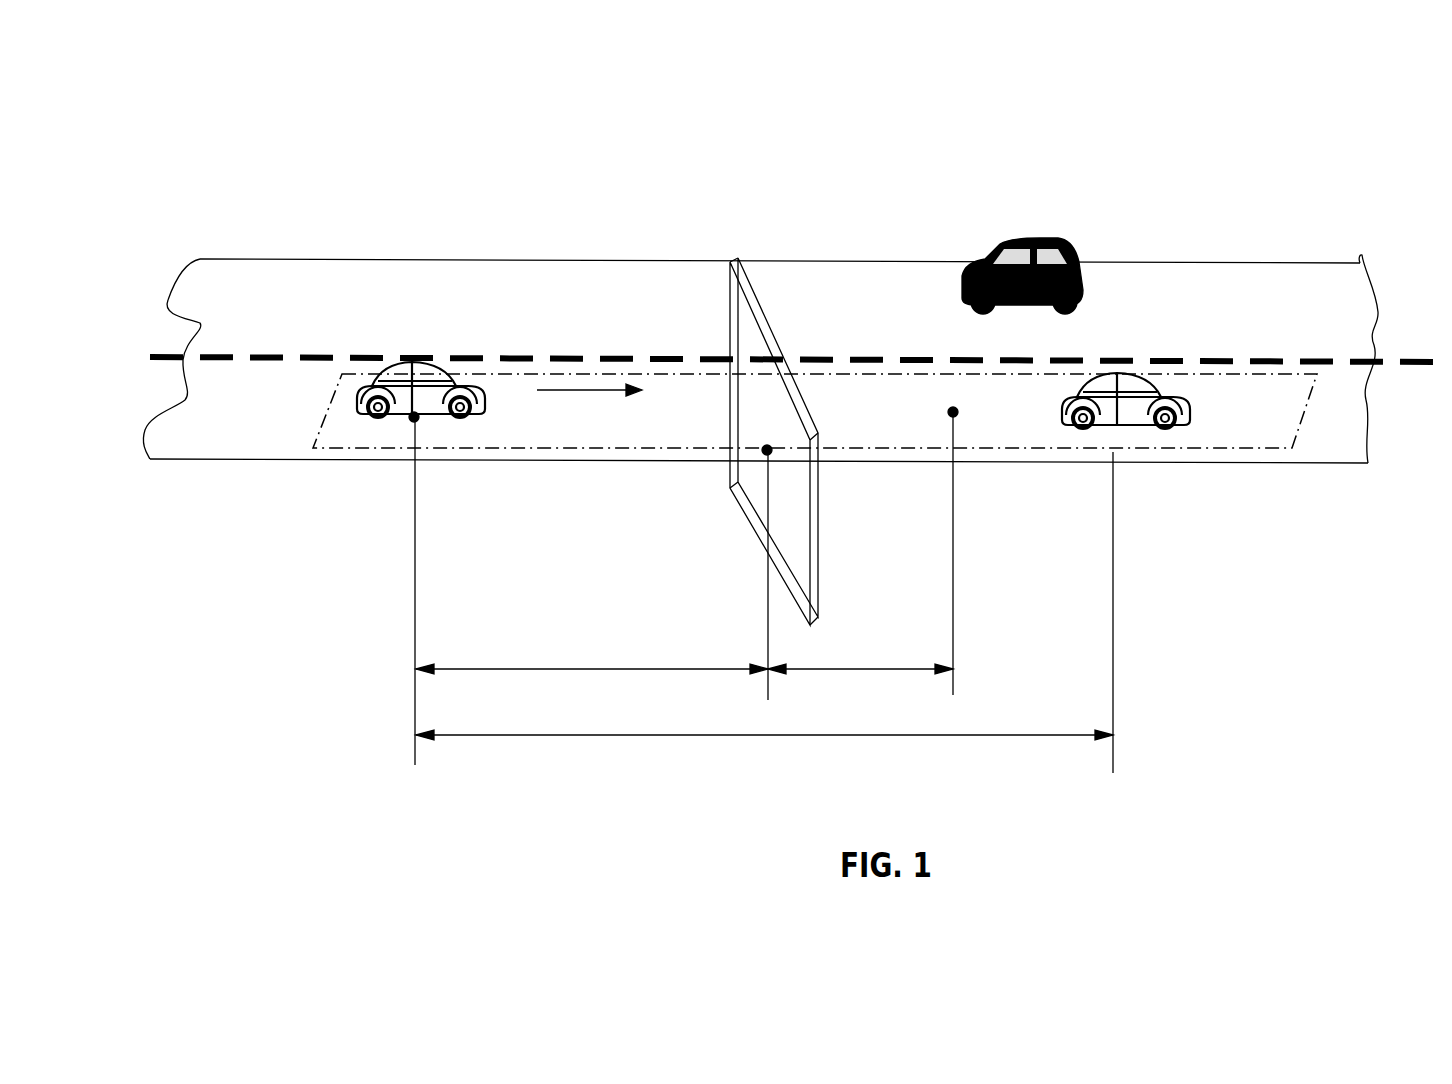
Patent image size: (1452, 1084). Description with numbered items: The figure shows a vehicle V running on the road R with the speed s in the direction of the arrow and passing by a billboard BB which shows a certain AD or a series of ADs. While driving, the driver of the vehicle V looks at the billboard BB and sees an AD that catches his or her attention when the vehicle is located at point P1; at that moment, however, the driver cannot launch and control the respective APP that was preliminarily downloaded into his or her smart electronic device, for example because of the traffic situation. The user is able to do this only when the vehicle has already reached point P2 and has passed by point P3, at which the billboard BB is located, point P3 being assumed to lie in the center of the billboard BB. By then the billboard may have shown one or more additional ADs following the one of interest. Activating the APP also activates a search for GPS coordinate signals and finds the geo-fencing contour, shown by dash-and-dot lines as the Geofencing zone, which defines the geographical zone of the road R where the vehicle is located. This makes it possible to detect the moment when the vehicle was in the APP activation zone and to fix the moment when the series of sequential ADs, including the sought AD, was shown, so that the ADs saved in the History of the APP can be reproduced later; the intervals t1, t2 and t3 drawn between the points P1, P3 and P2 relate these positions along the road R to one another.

The road R is at (247, 402).
The vehicle V is at (447, 380).
The point P1 is at (413, 417).
The point P2 is at (953, 412).
The point P3 is at (767, 450).
The billboard BB is at (762, 390).
The speed s is at (589, 409).
The first time interval t1 is at (592, 652).
The second time interval t2 is at (860, 649).
The third time interval t3 is at (764, 612).
The geo-fencing contour Geofencing is at (503, 428).